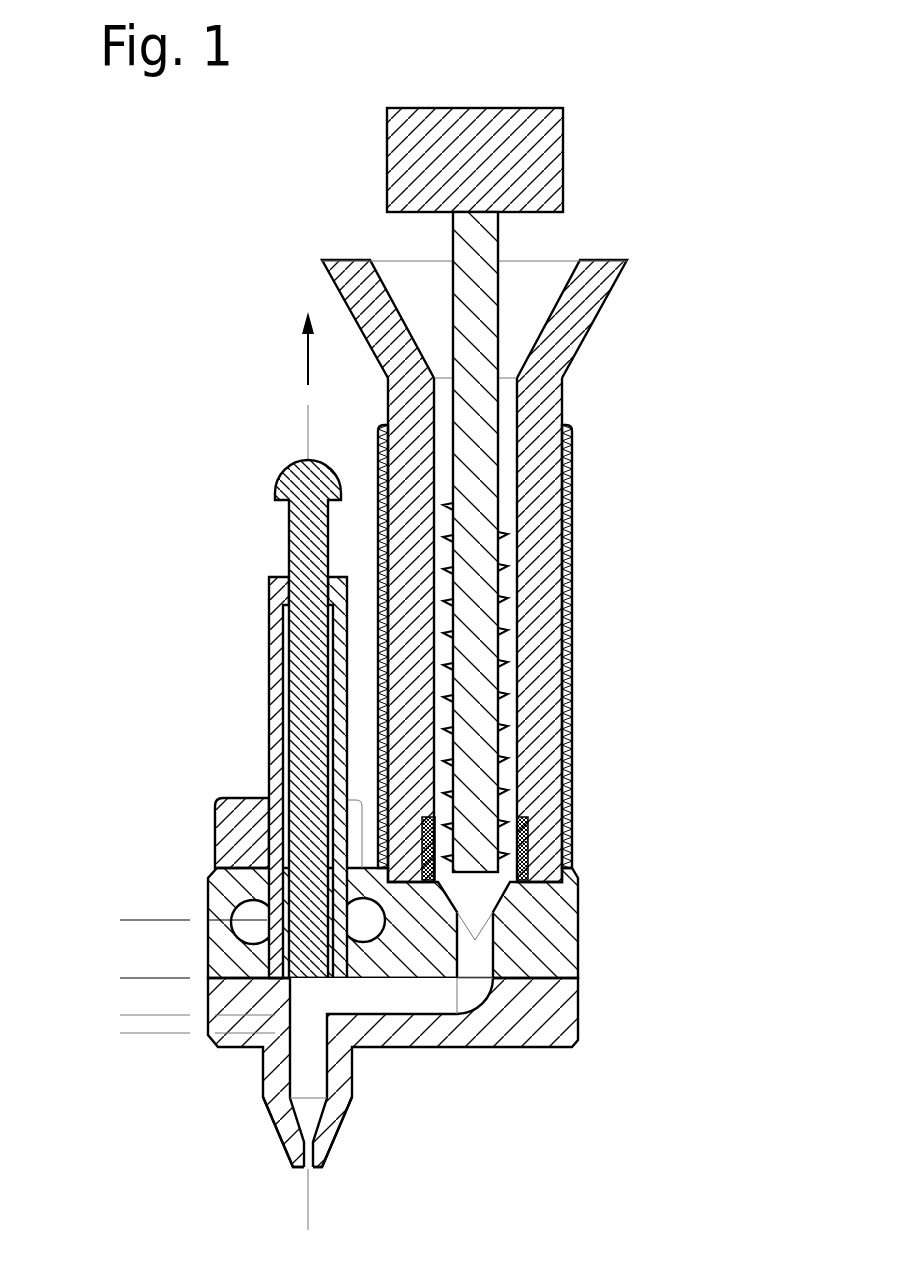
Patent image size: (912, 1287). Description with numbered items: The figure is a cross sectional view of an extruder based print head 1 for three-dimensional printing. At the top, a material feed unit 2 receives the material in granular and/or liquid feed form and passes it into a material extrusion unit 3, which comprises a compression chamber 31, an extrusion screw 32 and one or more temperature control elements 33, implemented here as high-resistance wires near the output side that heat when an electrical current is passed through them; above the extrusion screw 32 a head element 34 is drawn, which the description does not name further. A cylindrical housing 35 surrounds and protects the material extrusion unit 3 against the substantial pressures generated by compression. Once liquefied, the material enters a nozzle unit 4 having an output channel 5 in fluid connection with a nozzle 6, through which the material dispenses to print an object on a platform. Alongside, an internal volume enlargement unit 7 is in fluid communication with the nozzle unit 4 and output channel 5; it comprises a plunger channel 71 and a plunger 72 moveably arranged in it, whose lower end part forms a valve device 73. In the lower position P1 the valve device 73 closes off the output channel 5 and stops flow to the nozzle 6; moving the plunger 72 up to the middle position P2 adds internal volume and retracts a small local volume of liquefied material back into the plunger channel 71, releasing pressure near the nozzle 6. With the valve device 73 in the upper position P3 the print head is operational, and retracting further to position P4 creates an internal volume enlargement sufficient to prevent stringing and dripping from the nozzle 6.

The extruder based print head 1 is at (706, 116).
The material feed unit 2 is at (550, 267).
The material extrusion unit 3 is at (636, 521).
The nozzle unit 4 is at (615, 1048).
The output channel 5 is at (458, 993).
The nozzle 6 is at (327, 1145).
The internal volume enlargement unit 7 is at (124, 835).
The compression chamber 31 is at (480, 903).
The extrusion screw 32 is at (477, 645).
The temperature control element 33 is at (530, 828).
The knob 34 is at (507, 112).
The cylindrical housing 35 is at (538, 700).
The plunger channel 71 is at (283, 968).
The plunger 72 is at (290, 652).
The valve device 73 is at (283, 943).
The lower position P1 is at (120, 1033).
The middle position P2 is at (120, 1015).
The upper position P3 is at (120, 978).
The position P4 is at (120, 920).